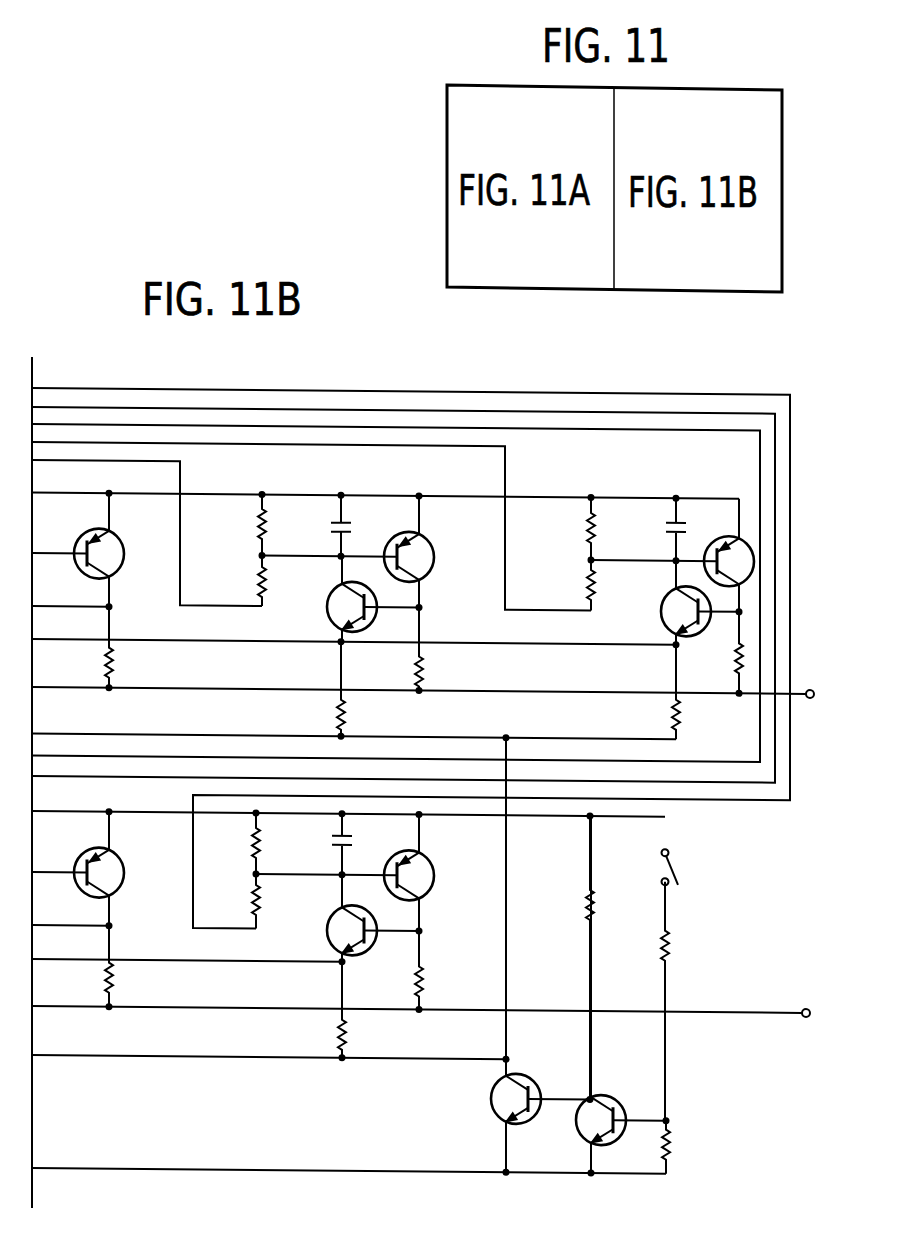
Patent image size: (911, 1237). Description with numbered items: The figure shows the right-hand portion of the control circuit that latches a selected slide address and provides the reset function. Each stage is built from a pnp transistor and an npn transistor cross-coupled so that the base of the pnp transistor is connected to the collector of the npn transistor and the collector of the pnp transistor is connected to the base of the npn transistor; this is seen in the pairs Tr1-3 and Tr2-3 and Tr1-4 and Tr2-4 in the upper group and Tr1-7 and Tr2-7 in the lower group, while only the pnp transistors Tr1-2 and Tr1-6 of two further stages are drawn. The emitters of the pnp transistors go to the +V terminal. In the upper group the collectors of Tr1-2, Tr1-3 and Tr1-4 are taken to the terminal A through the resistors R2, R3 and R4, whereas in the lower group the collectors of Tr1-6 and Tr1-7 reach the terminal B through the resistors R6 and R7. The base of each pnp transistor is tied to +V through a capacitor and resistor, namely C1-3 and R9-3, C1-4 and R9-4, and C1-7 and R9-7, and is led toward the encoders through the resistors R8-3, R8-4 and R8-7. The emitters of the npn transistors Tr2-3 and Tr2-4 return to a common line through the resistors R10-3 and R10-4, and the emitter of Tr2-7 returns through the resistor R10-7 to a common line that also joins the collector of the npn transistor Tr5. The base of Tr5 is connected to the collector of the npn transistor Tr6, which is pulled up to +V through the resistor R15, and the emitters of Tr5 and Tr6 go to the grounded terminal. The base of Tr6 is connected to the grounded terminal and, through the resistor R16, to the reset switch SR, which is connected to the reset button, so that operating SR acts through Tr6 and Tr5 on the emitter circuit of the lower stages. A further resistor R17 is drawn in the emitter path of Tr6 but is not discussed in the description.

The pnp transistor Tr1-2 is at (123, 566).
The resistor R2 is at (125, 647).
The resistor R9-3 is at (234, 525).
The resistor R8-3 is at (234, 580).
The capacitor C1-3 is at (321, 526).
The pnp transistor Tr1-3 is at (437, 567).
The npn transistor Tr2-3 is at (325, 609).
The resistor R3 is at (436, 648).
The resistor R10-3 is at (377, 689).
The resistor R9-4 is at (561, 528).
The resistor R8-4 is at (561, 584).
The capacitor C1-4 is at (649, 529).
The pnp transistor Tr1-4 is at (720, 548).
The npn transistor Tr2-4 is at (660, 615).
The resistor R4 is at (722, 653).
The resistor R10-4 is at (711, 692).
The terminal A is at (425, 676).
The pnp transistor Tr1-6 is at (128, 879).
The resistor R6 is at (127, 966).
The resistor R9-7 is at (284, 844).
The resistor R8-7 is at (284, 901).
The capacitor C1-7 is at (368, 845).
The pnp transistor Tr1-7 is at (436, 882).
The npn transistor Tr2-7 is at (326, 932).
The resistor R7 is at (436, 970).
The resistor R10-7 is at (377, 1010).
The resistor R15 is at (614, 957).
The reset switch SR is at (672, 857).
The resistor R16 is at (692, 1002).
The terminal B is at (421, 995).
The npn transistor Tr5 is at (499, 1100).
The npn transistor Tr6 is at (585, 1124).
The resistor R17 is at (690, 1148).